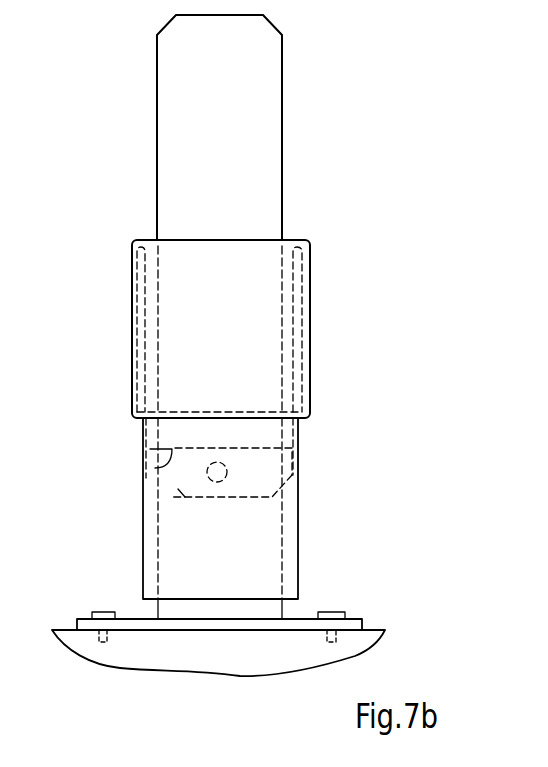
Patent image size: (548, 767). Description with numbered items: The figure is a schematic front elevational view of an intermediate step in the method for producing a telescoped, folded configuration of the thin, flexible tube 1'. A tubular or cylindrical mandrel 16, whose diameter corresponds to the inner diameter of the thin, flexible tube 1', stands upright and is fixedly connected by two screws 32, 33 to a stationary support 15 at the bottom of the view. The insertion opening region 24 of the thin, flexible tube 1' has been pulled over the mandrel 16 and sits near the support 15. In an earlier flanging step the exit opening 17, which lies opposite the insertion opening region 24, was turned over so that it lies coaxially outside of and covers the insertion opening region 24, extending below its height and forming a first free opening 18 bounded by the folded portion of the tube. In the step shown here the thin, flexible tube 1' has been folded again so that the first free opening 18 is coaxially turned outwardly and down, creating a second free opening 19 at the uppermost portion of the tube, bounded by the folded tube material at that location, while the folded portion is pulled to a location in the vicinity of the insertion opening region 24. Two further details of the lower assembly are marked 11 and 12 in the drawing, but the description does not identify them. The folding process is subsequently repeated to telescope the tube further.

The mandrel 16 is at (268, 52).
The second free opening 19 is at (302, 240).
The thin, flexible tube 1' is at (132, 321).
The first free opening 18 is at (310, 416).
The valve 11 is at (160, 468).
The passage 12 is at (207, 472).
The insertion opening region 24 is at (187, 487).
The exit opening 17 is at (190, 598).
The stationary support 15 is at (124, 661).
The screw 32 is at (104, 612).
The screw 33 is at (334, 612).